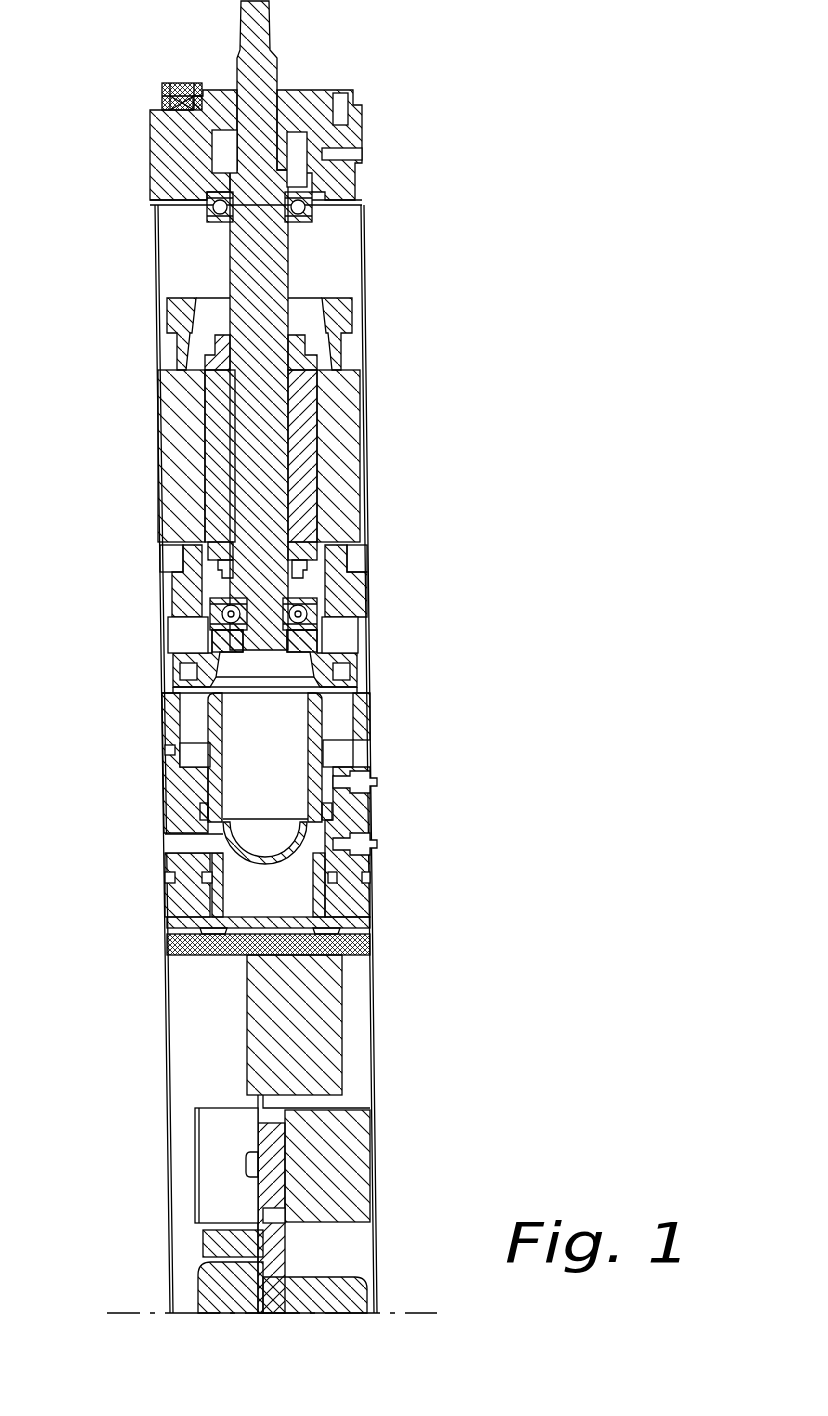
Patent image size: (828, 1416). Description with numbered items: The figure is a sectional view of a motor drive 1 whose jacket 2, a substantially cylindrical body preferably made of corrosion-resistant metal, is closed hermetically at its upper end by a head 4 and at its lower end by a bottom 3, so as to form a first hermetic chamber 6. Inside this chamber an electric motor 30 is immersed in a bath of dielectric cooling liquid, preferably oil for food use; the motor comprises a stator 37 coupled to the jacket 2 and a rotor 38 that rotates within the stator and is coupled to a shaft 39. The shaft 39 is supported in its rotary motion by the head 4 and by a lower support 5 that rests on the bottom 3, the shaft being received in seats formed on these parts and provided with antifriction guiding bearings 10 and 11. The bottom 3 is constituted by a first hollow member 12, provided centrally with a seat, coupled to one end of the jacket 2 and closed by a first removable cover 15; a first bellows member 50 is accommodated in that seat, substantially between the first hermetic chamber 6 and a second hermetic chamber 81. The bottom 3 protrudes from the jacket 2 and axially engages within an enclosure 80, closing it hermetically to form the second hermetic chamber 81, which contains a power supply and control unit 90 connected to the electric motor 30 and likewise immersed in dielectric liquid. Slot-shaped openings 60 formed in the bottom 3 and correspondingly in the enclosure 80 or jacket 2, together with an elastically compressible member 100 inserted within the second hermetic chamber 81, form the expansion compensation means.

The motor drive 1 is at (536, 215).
The jacket 2 is at (363, 283).
The bottom 3 is at (195, 723).
The head 4 is at (315, 98).
The lower support 5 is at (327, 650).
The first hermetic chamber 6 is at (158, 292).
The antifriction guiding bearing 10 is at (305, 212).
The antifriction guiding bearing 11 is at (228, 613).
The first hollow member 12 is at (178, 791).
The first removable cover 15 is at (185, 935).
The electric motor 30 is at (201, 290).
The stator 37 is at (181, 434).
The rotor 38 is at (310, 450).
The shaft 39 is at (255, 30).
The first bellows member 50 is at (281, 760).
The openings 60 is at (177, 845).
The enclosure 80 is at (375, 1008).
The second hermetic chamber 81 is at (172, 1034).
The power supply and control unit 90 is at (352, 1097).
The elastically compressible member 100 is at (369, 941).